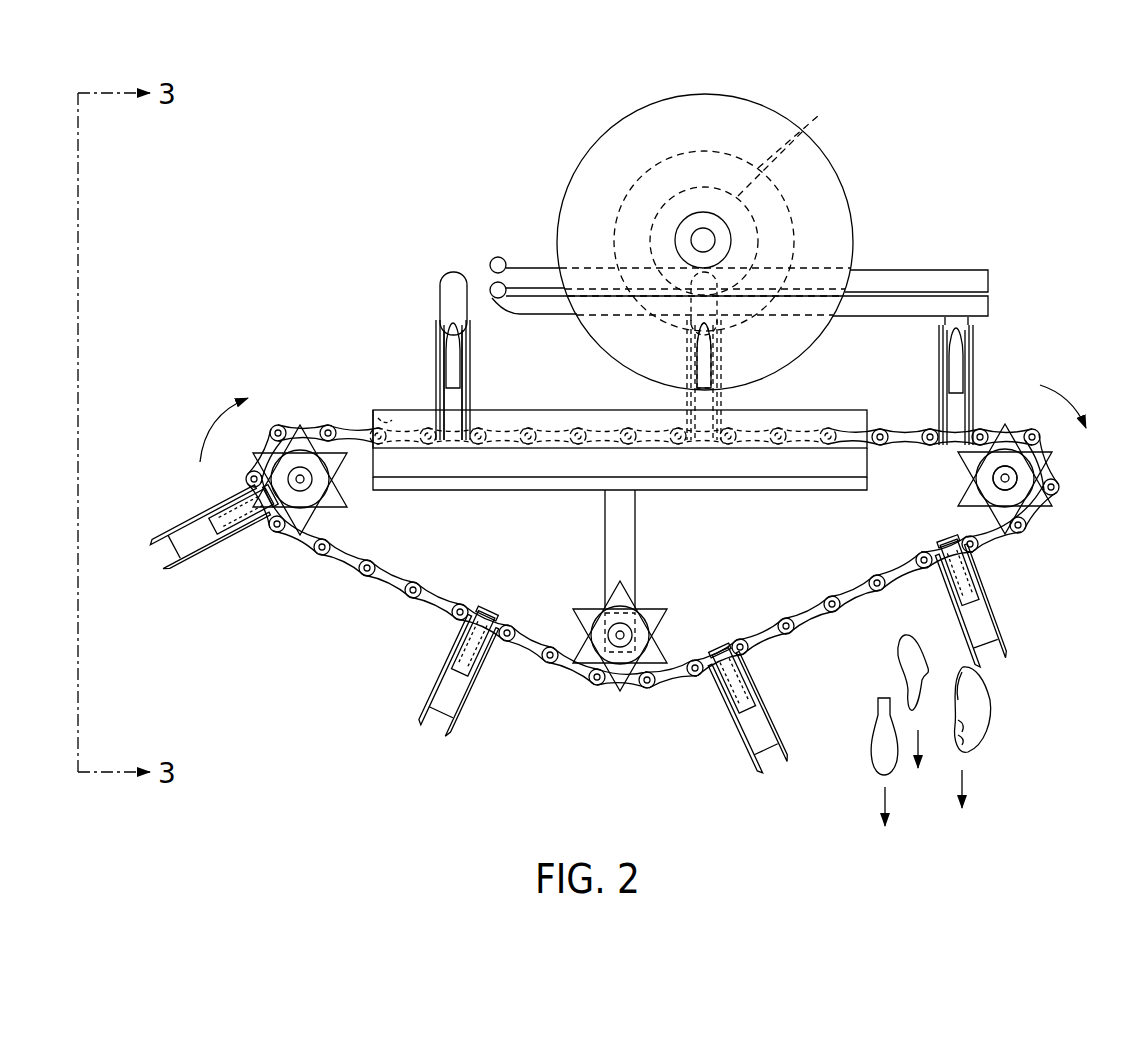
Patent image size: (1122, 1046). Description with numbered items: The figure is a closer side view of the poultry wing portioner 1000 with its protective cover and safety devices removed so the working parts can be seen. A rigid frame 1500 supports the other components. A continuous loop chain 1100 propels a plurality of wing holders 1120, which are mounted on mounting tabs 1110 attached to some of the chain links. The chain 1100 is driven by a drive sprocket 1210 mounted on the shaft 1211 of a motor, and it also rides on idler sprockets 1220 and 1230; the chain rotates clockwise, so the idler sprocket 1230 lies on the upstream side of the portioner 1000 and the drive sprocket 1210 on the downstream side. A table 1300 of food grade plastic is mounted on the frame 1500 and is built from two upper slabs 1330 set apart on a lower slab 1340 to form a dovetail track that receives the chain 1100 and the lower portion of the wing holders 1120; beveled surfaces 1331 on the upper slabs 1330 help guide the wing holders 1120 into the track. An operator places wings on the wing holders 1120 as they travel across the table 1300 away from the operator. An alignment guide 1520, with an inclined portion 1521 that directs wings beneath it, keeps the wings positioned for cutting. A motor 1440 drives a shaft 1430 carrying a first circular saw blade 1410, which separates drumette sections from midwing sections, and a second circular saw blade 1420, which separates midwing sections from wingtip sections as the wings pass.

The poultry wing portioner 1000 is at (318, 268).
The chain 1100 is at (410, 600).
The mounting tabs 1110 is at (442, 390).
The wing holders 1120 is at (437, 332).
The drive sprocket 1210 is at (965, 468).
The shaft 1211 is at (1012, 487).
The idler sprocket 1220 is at (600, 610).
The idler sprocket 1230 is at (318, 528).
The table 1300 is at (805, 410).
The upper slabs 1330 is at (373, 434).
The beveled surfaces 1331 is at (373, 410).
The lower slab 1340 is at (468, 465).
The first circular saw blade 1410 is at (703, 150).
The second circular saw blade 1420 is at (624, 113).
The shaft 1430 is at (708, 240).
The motor 1440 is at (822, 110).
The frame 1500 is at (748, 478).
The alignment guide 1520 is at (548, 298).
The inclined portion 1521 is at (492, 284).